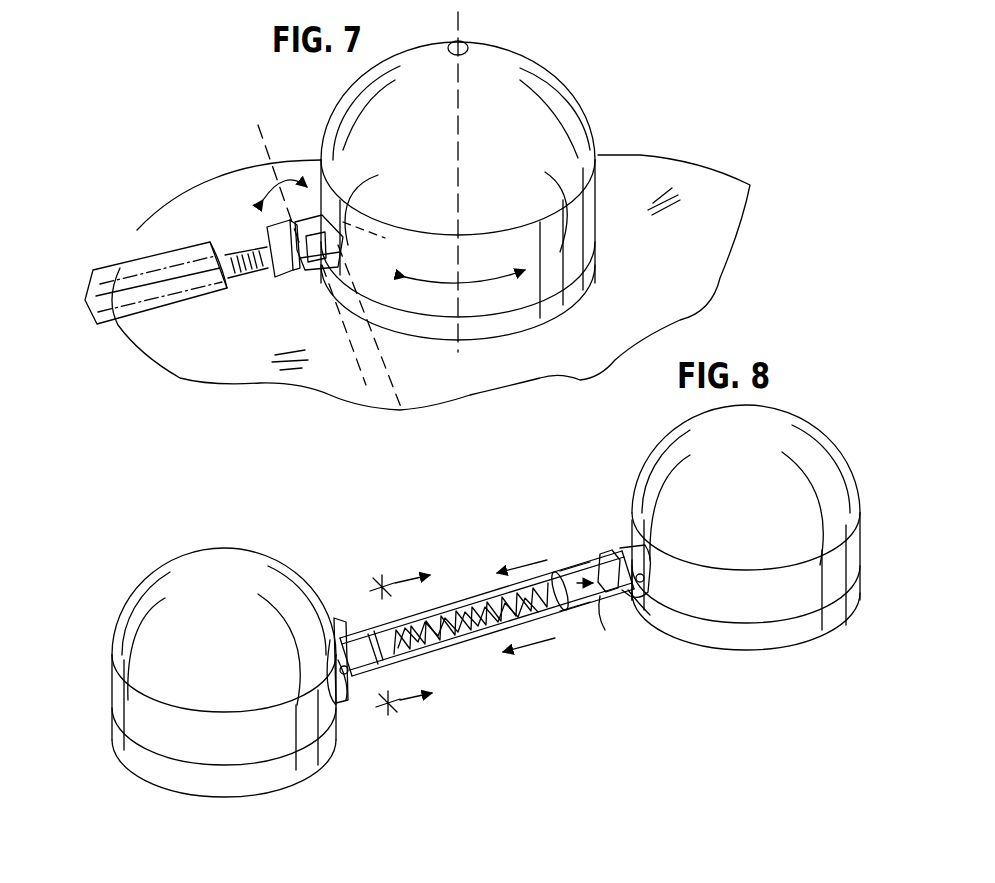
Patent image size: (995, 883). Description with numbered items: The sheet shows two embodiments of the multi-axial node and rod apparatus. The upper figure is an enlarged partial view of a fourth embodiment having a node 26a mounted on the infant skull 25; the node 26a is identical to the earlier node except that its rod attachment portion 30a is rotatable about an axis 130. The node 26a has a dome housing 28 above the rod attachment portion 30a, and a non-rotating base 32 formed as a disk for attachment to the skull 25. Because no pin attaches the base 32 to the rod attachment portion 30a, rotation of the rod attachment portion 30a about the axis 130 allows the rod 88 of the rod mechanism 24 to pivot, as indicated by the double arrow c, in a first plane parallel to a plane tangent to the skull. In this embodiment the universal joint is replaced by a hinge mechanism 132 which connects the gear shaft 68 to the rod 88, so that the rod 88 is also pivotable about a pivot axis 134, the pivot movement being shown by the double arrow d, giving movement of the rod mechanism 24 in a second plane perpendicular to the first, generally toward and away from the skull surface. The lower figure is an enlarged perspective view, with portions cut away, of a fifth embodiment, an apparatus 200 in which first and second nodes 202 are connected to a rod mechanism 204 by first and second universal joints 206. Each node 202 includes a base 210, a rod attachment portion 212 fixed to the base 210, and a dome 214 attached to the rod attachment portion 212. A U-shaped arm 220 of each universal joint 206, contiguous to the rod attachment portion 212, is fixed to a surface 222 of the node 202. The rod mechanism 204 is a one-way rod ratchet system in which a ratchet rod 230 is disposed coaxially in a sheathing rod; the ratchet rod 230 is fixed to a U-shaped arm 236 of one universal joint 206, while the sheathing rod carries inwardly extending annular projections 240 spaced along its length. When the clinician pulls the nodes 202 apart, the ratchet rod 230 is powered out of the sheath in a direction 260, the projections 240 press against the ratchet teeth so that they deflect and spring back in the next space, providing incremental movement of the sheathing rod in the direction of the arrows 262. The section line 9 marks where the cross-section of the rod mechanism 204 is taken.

In FIG. 7, the rod mechanism 24 is at (180, 328).
In FIG. 7, the infant skull 25 is at (668, 280).
In FIG. 7, the node 26a is at (593, 123).
In FIG. 7, the dome housing 28 is at (543, 90).
In FIG. 7, the rod attachment portion 30a is at (597, 213).
In FIG. 7, the base 32 is at (490, 328).
In FIG. 7, the gear shaft 68 is at (397, 407).
In FIG. 7, the rod 88 is at (243, 290).
In FIG. 7, the axis 130 is at (466, 44).
In FIG. 7, the hinge mechanism 132 is at (298, 288).
In FIG. 7, the pivot axis 134 is at (258, 163).
In FIG. 7, the double arrow c is at (525, 278).
In FIG. 7, the double arrow d is at (278, 172).
In FIG. 8, the apparatus 200 is at (478, 607).
In FIG. 8, the nodes 202 is at (464, 602).
In FIG. 8, the rod mechanism 204 is at (509, 694).
In FIG. 8, the universal joints 206 is at (613, 567).
In FIG. 8, the base 210 is at (186, 775).
In FIG. 8, the rod attachment portion 212 is at (143, 737).
In FIG. 8, the dome 214 is at (218, 563).
In FIG. 8, the U-shaped arm 220 is at (342, 700).
In FIG. 8, the surface 222 is at (708, 603).
In FIG. 8, the ratchet rod 230 is at (478, 580).
In FIG. 8, the U-shaped arm 236 is at (598, 603).
In FIG. 8, the projections 240 is at (463, 580).
In FIG. 8, the direction 260 is at (587, 580).
In FIG. 8, the arrows 262 is at (500, 572).
In FIG. 8, the section line 9- 9 is at (411, 642).